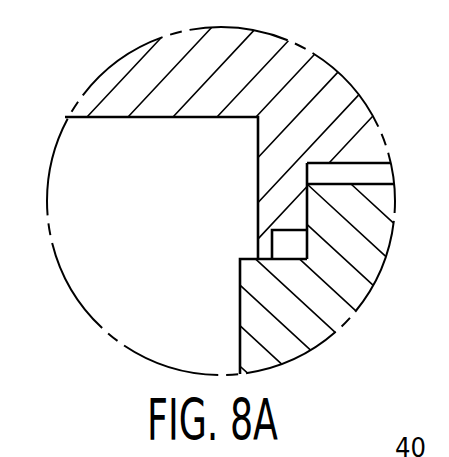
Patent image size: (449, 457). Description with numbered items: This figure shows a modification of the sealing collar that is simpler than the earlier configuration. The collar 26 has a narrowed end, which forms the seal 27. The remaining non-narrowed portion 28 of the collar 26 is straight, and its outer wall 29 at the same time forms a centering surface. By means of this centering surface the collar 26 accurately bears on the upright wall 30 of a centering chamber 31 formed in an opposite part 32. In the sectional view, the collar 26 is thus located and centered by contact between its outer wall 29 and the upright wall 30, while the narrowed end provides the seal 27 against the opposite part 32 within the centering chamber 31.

The collar 26 is at (298, 137).
The narrowed end (seal) 27 is at (268, 245).
The non-narrowed portion 28 is at (278, 198).
The outer wall 29 is at (307, 174).
The upright wall 30 is at (308, 248).
The centering chamber 31 is at (285, 263).
The opposite part 32 is at (347, 288).